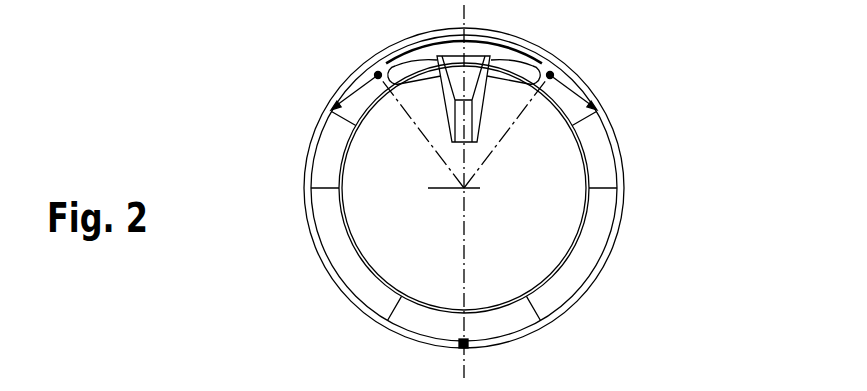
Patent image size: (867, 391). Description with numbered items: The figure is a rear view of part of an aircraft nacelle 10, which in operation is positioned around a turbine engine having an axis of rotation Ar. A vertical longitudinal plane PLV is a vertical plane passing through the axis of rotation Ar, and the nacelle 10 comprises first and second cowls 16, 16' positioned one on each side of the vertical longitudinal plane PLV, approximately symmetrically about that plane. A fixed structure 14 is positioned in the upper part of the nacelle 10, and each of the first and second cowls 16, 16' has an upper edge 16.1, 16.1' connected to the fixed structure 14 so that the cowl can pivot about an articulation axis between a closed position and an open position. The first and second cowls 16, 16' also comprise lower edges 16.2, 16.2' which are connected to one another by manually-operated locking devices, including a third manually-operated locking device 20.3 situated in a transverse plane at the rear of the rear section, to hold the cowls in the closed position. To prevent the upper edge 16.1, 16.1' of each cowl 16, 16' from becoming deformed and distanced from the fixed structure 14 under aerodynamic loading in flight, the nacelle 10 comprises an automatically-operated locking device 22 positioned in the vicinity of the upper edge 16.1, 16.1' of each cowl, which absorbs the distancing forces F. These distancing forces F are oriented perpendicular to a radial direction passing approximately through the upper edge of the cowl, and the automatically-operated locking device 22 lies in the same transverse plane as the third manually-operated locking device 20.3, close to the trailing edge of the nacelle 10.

The aircraft nacelle 10 is at (286, 146).
The fixed structure 14 is at (510, 36).
The cowl 16 is at (412, 188).
The second cowl 16' is at (517, 188).
The upper edge 16.1 is at (398, 42).
The upper edge 16.1' is at (577, 52).
The lower edge 16.2 is at (483, 193).
The lower edge 16.2' is at (489, 162).
The third manually-operated locking device 20.3 is at (458, 343).
The automatically-operated locking device 22 is at (358, 57).
The distancing forces F is at (345, 83).
The axis of rotation Ar is at (463, 190).
The vertical longitudinal plane PLV is at (468, 360).